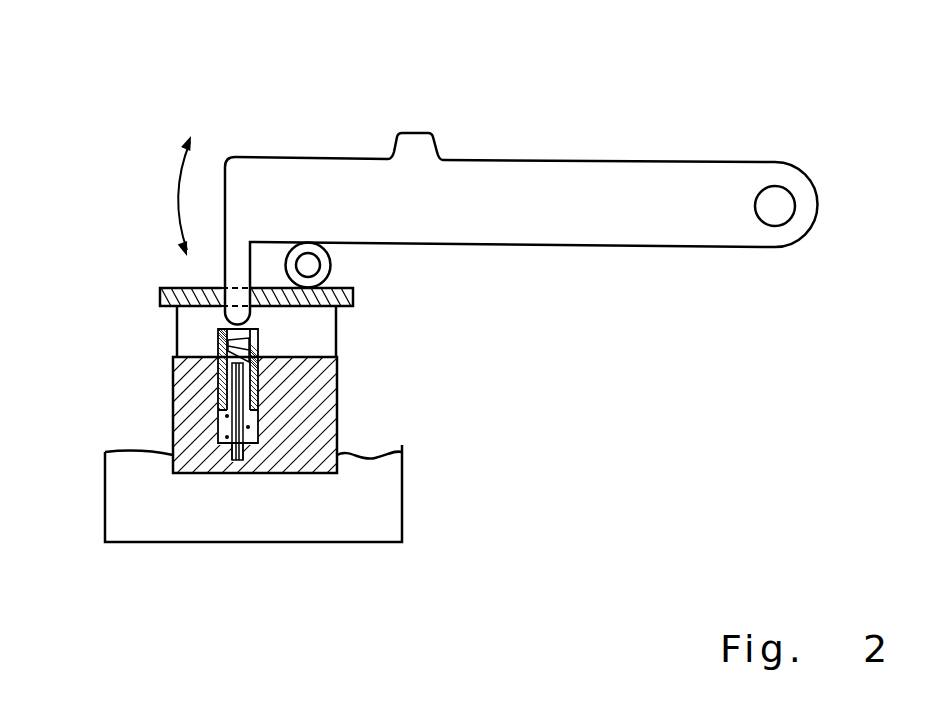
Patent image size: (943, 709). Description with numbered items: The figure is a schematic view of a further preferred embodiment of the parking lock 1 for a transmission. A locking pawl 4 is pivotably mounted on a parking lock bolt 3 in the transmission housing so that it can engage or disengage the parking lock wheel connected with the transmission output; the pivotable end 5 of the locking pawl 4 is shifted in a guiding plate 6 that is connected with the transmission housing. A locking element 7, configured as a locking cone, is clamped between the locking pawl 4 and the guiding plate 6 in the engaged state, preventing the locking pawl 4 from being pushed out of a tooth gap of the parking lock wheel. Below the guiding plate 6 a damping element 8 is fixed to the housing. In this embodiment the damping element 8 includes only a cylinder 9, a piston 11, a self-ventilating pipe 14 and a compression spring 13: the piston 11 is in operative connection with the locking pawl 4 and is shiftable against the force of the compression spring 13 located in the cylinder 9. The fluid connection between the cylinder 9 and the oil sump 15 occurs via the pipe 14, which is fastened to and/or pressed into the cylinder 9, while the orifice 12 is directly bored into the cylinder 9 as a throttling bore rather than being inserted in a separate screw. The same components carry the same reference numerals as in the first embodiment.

The parking lock 1 is at (222, 134).
The parking lock bolt 3 is at (778, 215).
The locking pawl 4 is at (665, 247).
The pivotable end 5 is at (175, 318).
The guiding plate 6 is at (180, 288).
The locking element 7 is at (309, 244).
The damping element 8 is at (148, 424).
The cylinder 9 is at (343, 457).
The piston 11 is at (218, 328).
The orifice 12 is at (237, 462).
The compression spring 13 is at (218, 364).
The self-ventilating pipe 14 is at (248, 452).
The oil sump 15 is at (132, 525).